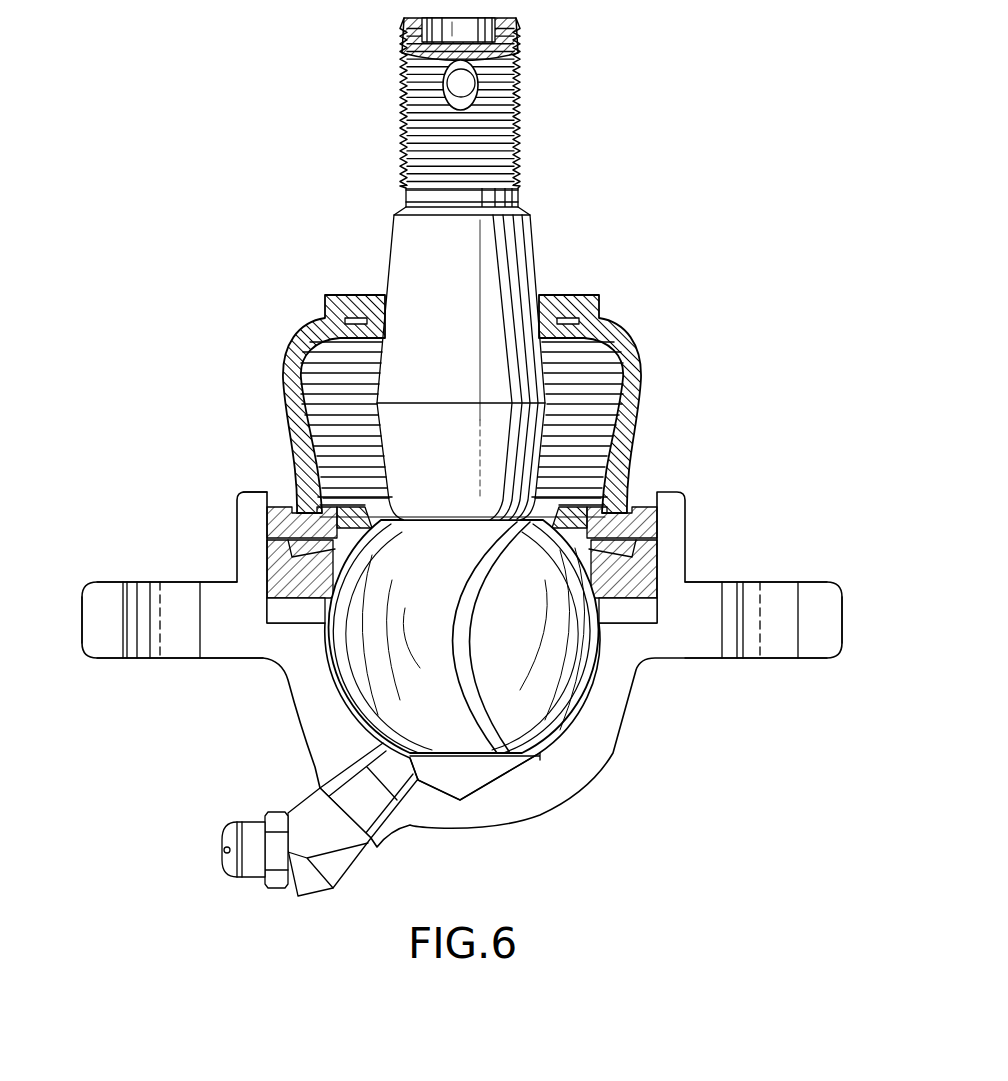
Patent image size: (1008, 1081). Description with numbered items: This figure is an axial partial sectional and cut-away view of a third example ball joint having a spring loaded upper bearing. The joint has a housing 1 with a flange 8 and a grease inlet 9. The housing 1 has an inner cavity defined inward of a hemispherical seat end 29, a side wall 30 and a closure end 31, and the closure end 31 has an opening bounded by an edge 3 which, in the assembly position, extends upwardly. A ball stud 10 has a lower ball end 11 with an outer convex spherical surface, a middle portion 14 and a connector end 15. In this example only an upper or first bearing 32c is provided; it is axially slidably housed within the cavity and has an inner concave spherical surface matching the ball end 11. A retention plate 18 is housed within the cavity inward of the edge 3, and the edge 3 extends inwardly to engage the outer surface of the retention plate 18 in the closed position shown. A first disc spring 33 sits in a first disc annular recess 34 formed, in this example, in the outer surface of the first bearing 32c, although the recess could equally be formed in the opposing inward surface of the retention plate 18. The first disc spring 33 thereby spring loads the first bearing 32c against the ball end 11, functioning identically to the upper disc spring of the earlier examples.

The housing 1 is at (323, 698).
The edge 3 is at (280, 497).
The flange 8 is at (92, 658).
The grease inlet 9 is at (310, 895).
The ball stud 10 is at (513, 268).
The ball end 11 is at (529, 652).
The middle portion 14 is at (475, 388).
The connector end 15 is at (516, 105).
The retention plate 18 is at (283, 522).
The hemispherical seat end 29 is at (570, 715).
The side wall 30 is at (658, 562).
The closure end 31 is at (640, 474).
The first bearing 32c is at (625, 592).
The first disc spring 33 is at (626, 507).
The first disc annular recess 34 is at (290, 562).